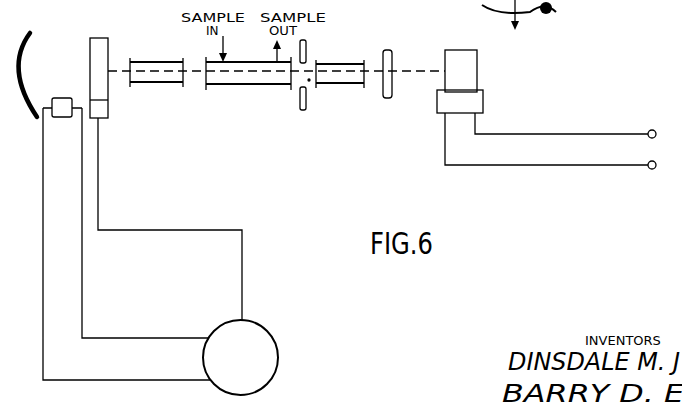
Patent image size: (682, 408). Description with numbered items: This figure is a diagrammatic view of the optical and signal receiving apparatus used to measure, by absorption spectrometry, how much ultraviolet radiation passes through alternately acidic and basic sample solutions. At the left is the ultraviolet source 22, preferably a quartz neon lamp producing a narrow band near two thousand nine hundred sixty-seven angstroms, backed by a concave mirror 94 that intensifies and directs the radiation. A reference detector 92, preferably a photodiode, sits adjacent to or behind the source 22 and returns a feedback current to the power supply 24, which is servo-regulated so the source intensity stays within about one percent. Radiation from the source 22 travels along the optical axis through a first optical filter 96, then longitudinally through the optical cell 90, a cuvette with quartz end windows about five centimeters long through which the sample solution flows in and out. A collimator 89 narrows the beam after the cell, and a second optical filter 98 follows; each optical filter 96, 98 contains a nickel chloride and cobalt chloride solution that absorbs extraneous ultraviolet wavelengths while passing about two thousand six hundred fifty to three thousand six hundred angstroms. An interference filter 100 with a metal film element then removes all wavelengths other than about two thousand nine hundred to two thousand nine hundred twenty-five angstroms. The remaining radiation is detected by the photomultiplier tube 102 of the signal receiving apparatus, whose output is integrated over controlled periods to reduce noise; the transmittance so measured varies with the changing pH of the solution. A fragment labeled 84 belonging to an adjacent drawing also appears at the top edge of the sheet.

The ultraviolet source 22 is at (102, 40).
The power supply 24 is at (278, 352).
The component of adjacent figure 84 is at (482, 4).
The collimator 89 is at (303, 110).
The optical cell 90 is at (252, 85).
The reference detector 92 is at (62, 98).
The concave mirror 94 is at (30, 34).
The optical filter 96 is at (160, 84).
The optical filter 98 is at (347, 84).
The interference filter 100 is at (388, 98).
The photomultiplier tube 102 is at (482, 100).